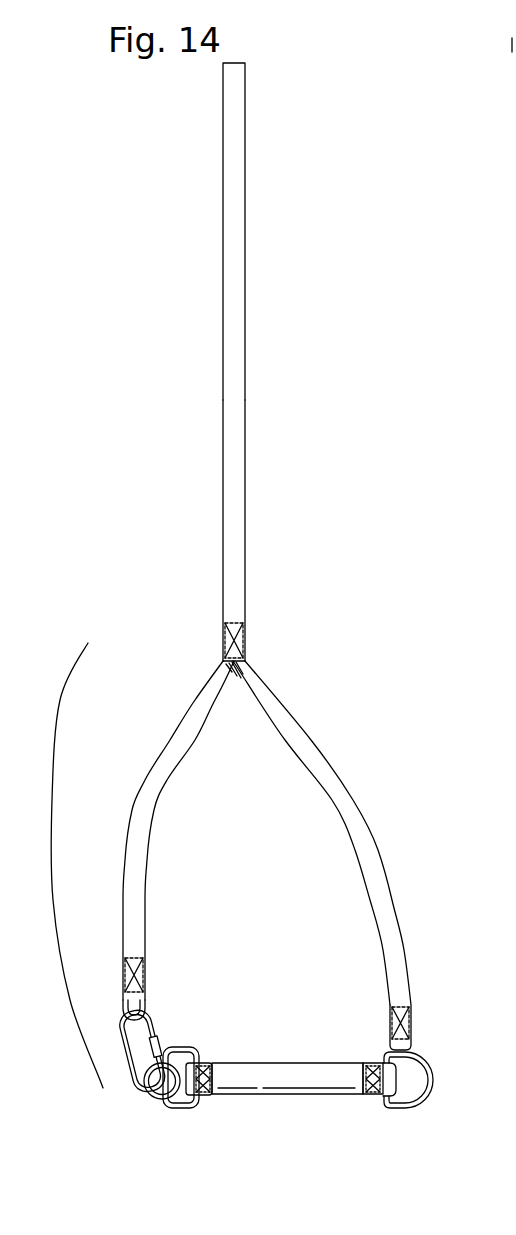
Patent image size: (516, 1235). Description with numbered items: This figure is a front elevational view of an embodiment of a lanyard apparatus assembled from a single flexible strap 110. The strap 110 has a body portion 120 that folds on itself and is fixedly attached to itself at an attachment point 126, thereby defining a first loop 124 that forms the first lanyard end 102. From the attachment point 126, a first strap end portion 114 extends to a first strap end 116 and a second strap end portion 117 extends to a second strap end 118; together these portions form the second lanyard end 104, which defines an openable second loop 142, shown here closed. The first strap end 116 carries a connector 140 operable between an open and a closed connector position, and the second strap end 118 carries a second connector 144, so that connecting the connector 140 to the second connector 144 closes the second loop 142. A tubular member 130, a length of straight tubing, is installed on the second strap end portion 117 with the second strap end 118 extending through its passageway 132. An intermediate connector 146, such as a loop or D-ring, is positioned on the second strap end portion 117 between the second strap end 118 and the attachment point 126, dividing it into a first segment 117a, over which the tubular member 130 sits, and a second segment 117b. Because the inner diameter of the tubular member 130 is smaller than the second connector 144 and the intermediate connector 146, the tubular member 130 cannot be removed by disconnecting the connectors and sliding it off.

The first lanyard end 102 is at (487, 113).
The second lanyard end 104 is at (515, 650).
The flexible strap 110 is at (224, 582).
The first strap end portion 114 is at (193, 722).
The first strap end 116 is at (135, 1005).
The second strap end portion 117 is at (385, 1068).
The first segment 117a is at (372, 1075).
The second segment 117b is at (402, 960).
The second strap end 118 is at (196, 1074).
The body portion 120 is at (237, 456).
The first loop 124 is at (237, 244).
The attachment point 126 is at (236, 641).
The tubular member 130 is at (298, 1075).
The passageway 132 is at (196, 1101).
The connector 140 is at (153, 1012).
The second loop 142 is at (61, 718).
The second connector 144 is at (179, 1050).
The intermediate connector 146 is at (432, 1076).